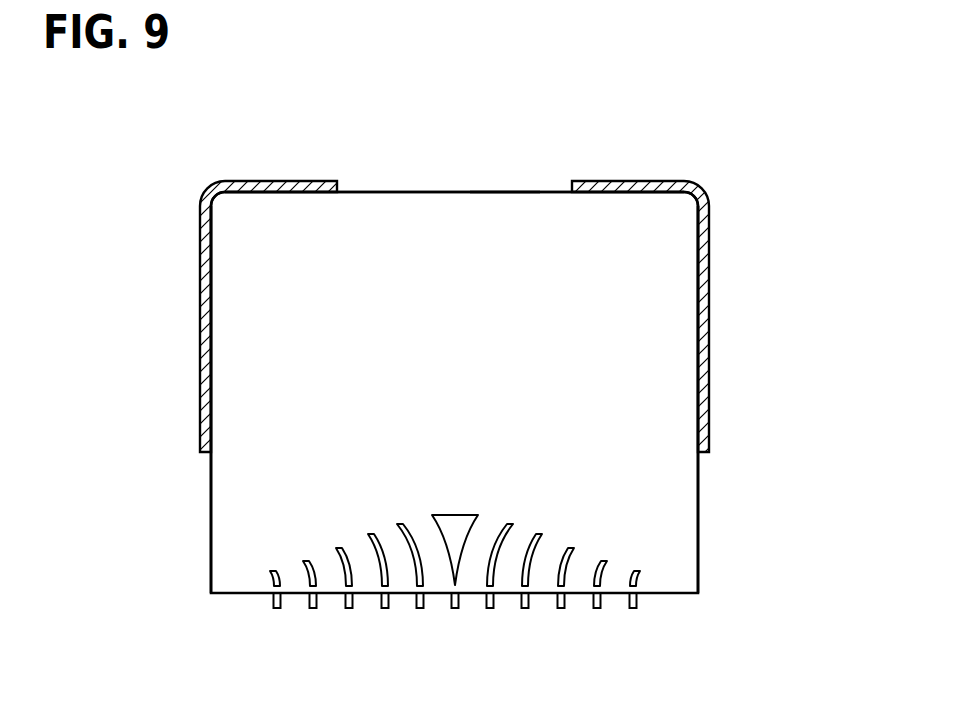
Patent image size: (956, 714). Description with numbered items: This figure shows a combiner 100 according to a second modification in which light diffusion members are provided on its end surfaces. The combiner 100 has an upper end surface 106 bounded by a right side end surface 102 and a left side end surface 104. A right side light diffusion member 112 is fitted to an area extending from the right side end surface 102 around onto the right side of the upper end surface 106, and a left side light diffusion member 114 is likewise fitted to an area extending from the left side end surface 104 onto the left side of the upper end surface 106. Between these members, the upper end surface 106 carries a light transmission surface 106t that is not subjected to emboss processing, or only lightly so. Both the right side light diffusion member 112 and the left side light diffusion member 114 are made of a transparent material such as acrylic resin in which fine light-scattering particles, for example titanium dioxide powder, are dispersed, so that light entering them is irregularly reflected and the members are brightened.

The combiner 100 is at (718, 92).
The right side end surface 102 is at (698, 493).
The left side end surface 104 is at (211, 493).
The upper end surface 106 is at (420, 190).
The light transmission surface 106t is at (505, 177).
The right side light diffusion member 112 is at (665, 183).
The left side light diffusion member 114 is at (253, 180).